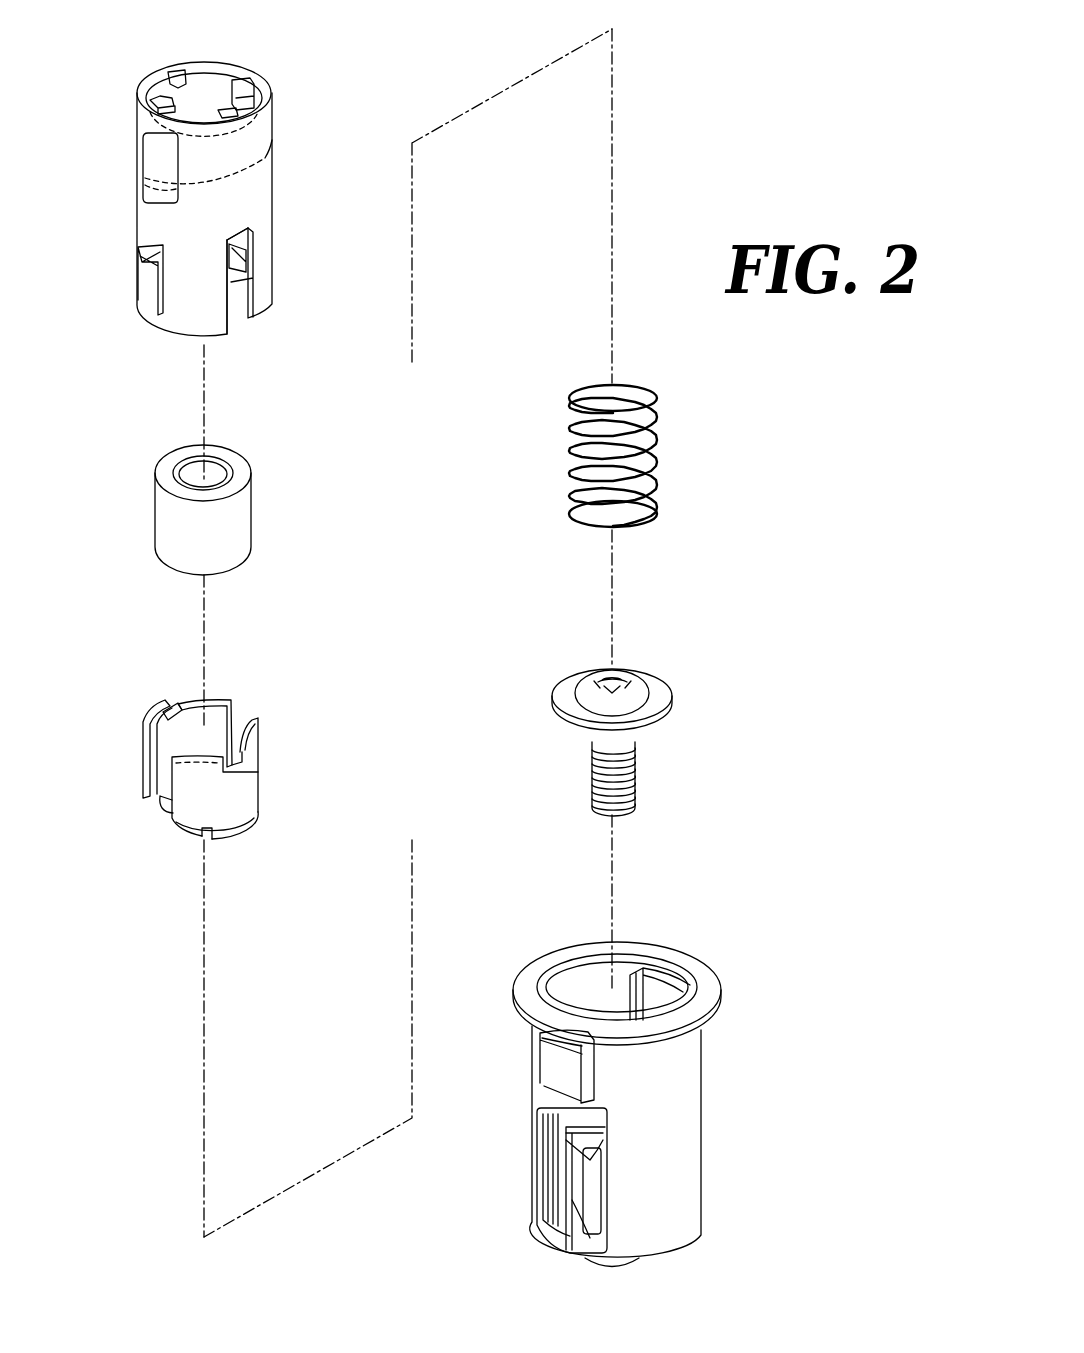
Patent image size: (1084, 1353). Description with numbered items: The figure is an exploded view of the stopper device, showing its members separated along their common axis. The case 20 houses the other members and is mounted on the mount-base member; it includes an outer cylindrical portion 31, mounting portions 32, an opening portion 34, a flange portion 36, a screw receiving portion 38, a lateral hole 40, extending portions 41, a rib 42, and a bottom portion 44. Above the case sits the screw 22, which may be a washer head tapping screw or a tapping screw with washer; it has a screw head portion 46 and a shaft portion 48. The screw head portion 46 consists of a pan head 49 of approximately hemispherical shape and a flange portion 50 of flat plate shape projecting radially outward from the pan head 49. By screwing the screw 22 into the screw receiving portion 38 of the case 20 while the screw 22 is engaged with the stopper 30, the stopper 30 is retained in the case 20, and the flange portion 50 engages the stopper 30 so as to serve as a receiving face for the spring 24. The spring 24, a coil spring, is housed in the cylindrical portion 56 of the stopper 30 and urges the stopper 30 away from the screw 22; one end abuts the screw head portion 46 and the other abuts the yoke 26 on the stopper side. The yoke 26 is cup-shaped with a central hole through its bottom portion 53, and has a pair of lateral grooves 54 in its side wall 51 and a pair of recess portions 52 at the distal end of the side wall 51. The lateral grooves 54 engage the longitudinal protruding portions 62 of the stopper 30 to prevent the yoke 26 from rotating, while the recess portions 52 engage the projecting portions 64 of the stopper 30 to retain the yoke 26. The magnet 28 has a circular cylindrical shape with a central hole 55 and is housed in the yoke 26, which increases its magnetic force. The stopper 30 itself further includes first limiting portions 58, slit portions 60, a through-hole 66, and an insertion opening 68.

The case 20 is at (629, 1082).
The screw 22 is at (625, 718).
The spring 24 is at (660, 455).
The yoke 26 is at (206, 757).
The magnet 28 is at (226, 485).
The stopper 30 is at (218, 192).
The outer cylindrical portion 31 is at (686, 1055).
The mounting portions 32 is at (660, 966).
The opening portion 34 is at (615, 960).
The flange portion 36 is at (706, 982).
The screw receiving portion 38 is at (572, 1140).
The lateral hole 40 is at (548, 1172).
The extending portions 41 is at (592, 1190).
The rib 42 is at (574, 1196).
The bottom portion 44 is at (582, 1244).
The screw head portion 46 is at (640, 683).
The shaft portion 48 is at (637, 785).
The pan head 49 is at (595, 710).
The flange portion 50 is at (560, 690).
The side wall 51 is at (220, 798).
The recess portions 52 is at (172, 708).
The bottom portion 53 is at (165, 832).
The lateral grooves 54 is at (148, 770).
The central hole 55 is at (195, 470).
The cylindrical portion 56 is at (150, 215).
The first limiting portions 58 is at (245, 245).
The slit portions 60 is at (255, 283).
The longitudinal protruding portions 62 is at (158, 110).
The projecting portions 64 is at (177, 74).
The through-hole 66 is at (205, 86).
The insertion opening 68 is at (238, 318).